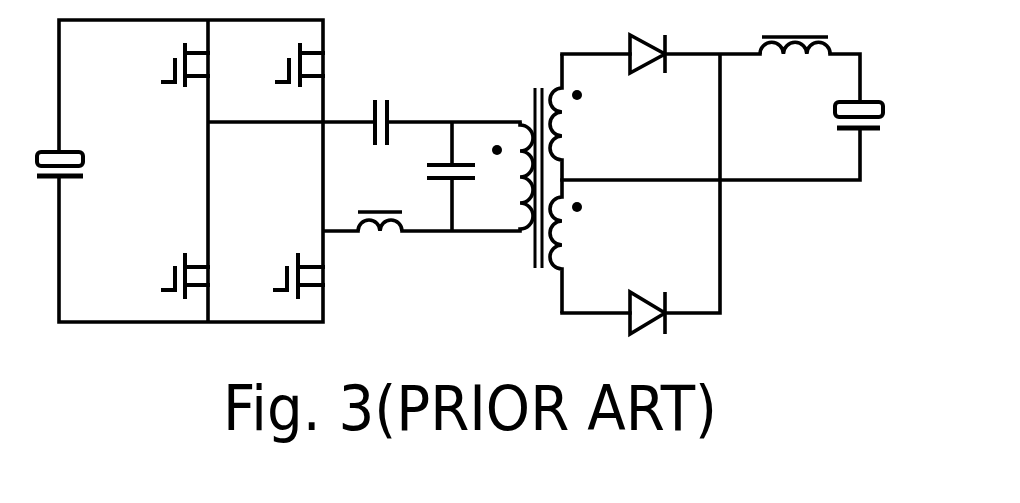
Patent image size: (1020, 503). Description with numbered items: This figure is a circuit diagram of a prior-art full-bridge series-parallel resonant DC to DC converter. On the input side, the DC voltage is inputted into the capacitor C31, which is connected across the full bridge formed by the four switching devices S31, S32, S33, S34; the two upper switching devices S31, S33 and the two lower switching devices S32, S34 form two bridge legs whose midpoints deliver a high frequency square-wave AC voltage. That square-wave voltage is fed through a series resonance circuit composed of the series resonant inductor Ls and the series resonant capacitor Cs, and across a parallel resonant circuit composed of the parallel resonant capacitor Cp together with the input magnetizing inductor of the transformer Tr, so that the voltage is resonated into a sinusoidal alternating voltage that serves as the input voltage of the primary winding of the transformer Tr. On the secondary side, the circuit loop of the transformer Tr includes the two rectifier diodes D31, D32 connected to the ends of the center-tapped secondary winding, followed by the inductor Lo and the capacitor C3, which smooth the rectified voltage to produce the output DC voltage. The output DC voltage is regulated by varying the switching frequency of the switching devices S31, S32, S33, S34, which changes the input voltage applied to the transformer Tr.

The switching device S31 is at (160, 65).
The switching device S32 is at (160, 276).
The switching device S33 is at (274, 65).
The switching device S34 is at (275, 276).
The capacitor C31 is at (88, 169).
The series resonant capacitor Cs is at (386, 104).
The parallel resonant capacitor Cp is at (433, 175).
The series resonant inductor Ls is at (380, 242).
The transformer Tr is at (537, 183).
The rectifier diode D31 is at (639, 77).
The rectifier diode D32 is at (641, 294).
The inductor Lo is at (795, 64).
The capacitor C3 is at (834, 135).